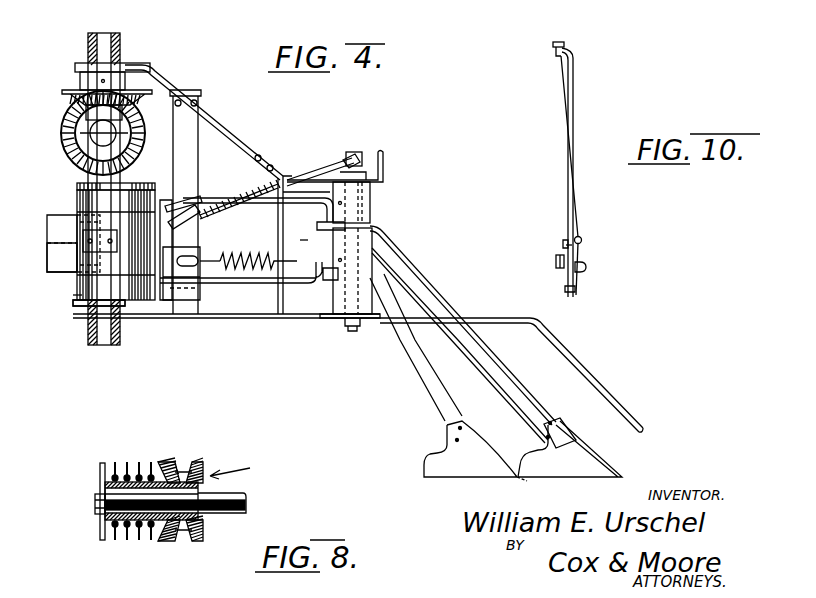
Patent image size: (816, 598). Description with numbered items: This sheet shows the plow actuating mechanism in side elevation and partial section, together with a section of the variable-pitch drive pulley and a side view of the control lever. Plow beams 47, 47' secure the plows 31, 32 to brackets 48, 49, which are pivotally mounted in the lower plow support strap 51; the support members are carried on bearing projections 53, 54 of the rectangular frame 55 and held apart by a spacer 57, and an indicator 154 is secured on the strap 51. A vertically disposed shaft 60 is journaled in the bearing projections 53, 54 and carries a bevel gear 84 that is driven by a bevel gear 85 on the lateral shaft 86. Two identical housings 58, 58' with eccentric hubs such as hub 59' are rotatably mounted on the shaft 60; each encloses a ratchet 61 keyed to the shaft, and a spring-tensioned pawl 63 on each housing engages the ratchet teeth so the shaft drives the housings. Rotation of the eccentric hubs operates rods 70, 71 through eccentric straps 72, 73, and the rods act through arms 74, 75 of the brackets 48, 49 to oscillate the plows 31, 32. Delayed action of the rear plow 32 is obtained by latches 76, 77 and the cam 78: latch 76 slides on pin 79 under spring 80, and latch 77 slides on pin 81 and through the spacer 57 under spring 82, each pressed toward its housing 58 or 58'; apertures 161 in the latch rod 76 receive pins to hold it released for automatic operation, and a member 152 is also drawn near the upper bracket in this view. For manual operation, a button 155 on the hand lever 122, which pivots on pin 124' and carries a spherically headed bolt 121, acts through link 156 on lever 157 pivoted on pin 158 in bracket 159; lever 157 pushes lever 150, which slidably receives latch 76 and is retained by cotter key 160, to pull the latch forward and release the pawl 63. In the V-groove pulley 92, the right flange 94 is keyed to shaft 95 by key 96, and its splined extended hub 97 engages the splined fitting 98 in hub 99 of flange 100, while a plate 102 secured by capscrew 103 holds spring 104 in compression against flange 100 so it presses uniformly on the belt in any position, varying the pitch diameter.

In FIG. 4, the bearing projection 53 is at (113, 36).
In FIG. 4, the bearing projection 54 is at (90, 342).
In FIG. 4, the rectangular frame 55 is at (128, 80).
In FIG. 4, the bevel gear 84 is at (66, 89).
In FIG. 4, the bevel gear 85 is at (63, 124).
In FIG. 4, the shaft 60 is at (76, 146).
In FIG. 4, the eccentric strap 72 is at (78, 194).
In FIG. 4, the ratchet 61 is at (76, 222).
In FIG. 4, the housing 58 is at (50, 243).
In FIG. 4, the housing 58' is at (38, 257).
In FIG. 4, the cam 78 is at (88, 253).
In FIG. 4, the eccentric hub 59' is at (53, 304).
In FIG. 4, the eccentric strap 73 is at (86, 306).
In FIG. 4, the pawl 63 is at (165, 200).
In FIG. 4, the shaft 86 is at (118, 133).
In FIG. 4, the latch 76 is at (186, 214).
In FIG. 4, the pin 79 is at (196, 204).
In FIG. 4, the rod 70 is at (208, 210).
In FIG. 4, the spring 80 is at (284, 176).
In FIG. 4, the circular aperture 161 is at (300, 176).
In FIG. 4, the cotter key 160 is at (360, 160).
In FIG. 4, the angle bracket 152 is at (385, 170).
In FIG. 4, the bracket 49 is at (372, 190).
In FIG. 4, the arm 74 is at (318, 216).
In FIG. 4, the spacer 57 is at (286, 252).
In FIG. 4, the spring 82 is at (238, 256).
In FIG. 4, the pin 81 is at (214, 252).
In FIG. 4, the latch 77 is at (208, 300).
In FIG. 4, the rod 71 is at (250, 286).
In FIG. 4, the arm 75 is at (304, 297).
In FIG. 4, the member 51 is at (283, 318).
In FIG. 4, the bracket 48 is at (337, 300).
In FIG. 4, the plow beam 47 is at (463, 334).
In FIG. 4, the plow beam 47' is at (410, 347).
In FIG. 4, the indicator 154 is at (606, 394).
In FIG. 4, the plow 32 is at (484, 455).
In FIG. 4, the plow 31 is at (600, 462).
In FIG. 10, the hand lever 122 is at (576, 83).
In FIG. 10, the button 155 is at (566, 44).
In FIG. 10, the link 156 is at (578, 214).
In FIG. 10, the lever 157 is at (583, 242).
In FIG. 10, the bracket 159 is at (564, 242).
In FIG. 10, the pin 158 is at (566, 246).
In FIG. 10, the lever 150 is at (557, 262).
In FIG. 10, the spherically headed bolt 121 is at (587, 267).
In FIG. 10, the pin 124' is at (603, 290).
In FIG. 8, the plate 102 is at (101, 464).
In FIG. 8, the capscrew 103 is at (95, 502).
In FIG. 8, the shaft 95 is at (248, 505).
In FIG. 8, the key 96 is at (200, 514).
In FIG. 8, the flange 100 is at (190, 470).
In FIG. 8, the hub 99 is at (175, 478).
In FIG. 8, the splined fitting 98 is at (145, 472).
In FIG. 8, the spring 104 is at (122, 470).
In FIG. 8, the V-groove pulley 92 is at (245, 465).
In FIG. 8, the right flange 94 is at (203, 486).
In FIG. 8, the extended hub 97 is at (105, 514).